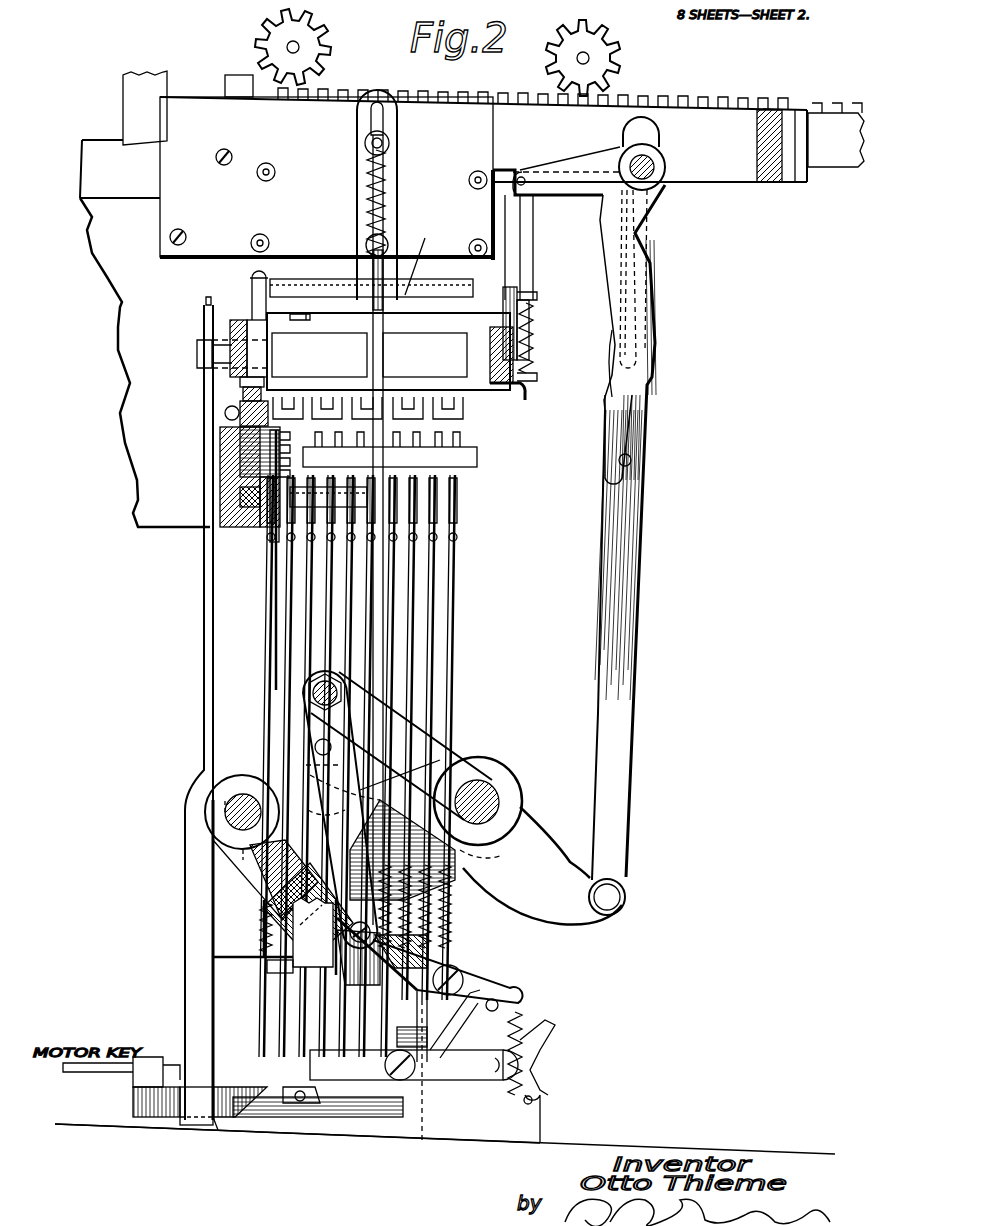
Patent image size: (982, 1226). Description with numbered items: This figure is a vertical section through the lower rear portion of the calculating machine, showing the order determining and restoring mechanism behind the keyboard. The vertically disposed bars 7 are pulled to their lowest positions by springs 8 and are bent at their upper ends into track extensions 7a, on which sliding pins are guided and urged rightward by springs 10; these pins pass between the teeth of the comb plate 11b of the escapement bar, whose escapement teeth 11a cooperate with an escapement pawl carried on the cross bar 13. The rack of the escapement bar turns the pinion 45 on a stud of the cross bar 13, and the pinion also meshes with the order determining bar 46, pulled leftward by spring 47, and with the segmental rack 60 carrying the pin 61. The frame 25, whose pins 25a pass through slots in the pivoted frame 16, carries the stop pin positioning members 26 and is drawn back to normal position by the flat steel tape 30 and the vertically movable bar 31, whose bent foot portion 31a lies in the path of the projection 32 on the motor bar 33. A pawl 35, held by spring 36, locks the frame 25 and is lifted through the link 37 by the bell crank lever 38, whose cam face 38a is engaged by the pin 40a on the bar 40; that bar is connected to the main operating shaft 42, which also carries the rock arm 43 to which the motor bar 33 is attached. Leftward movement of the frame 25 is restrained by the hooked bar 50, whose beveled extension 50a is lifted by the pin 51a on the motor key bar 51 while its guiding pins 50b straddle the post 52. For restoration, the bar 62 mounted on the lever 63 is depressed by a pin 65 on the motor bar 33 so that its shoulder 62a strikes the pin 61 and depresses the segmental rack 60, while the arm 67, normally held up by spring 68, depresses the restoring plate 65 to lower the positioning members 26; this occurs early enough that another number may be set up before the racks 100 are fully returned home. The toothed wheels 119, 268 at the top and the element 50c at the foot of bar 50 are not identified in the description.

The gear 119 is at (318, 38).
The gear 268 is at (598, 54).
The racks 100 is at (512, 135).
The spring 68 is at (397, 172).
The bar 62 is at (383, 220).
The restoring plate 65 is at (363, 725).
The link 37 is at (525, 230).
The bell crank lever 38 is at (628, 275).
The cam face 38a is at (605, 432).
The bar 40 is at (628, 587).
The pin 40a is at (631, 460).
The arm 67 is at (371, 298).
The frame 16 is at (232, 318).
The flat steel tape 30 is at (388, 351).
The frame 25 is at (448, 355).
The pins 25a is at (197, 352).
The pawl 35 is at (503, 305).
The spring 36 is at (535, 315).
The stop pin positioning members 26 is at (463, 410).
The comb plate 11b is at (477, 455).
The order determining bar 46 is at (240, 396).
The spring 47 is at (225, 410).
The pinion 45 is at (252, 445).
The cross bar 13 is at (225, 468).
The escapement teeth 11a is at (245, 495).
The pin 61 is at (328, 496).
The segmental rack 60 is at (270, 547).
The bars 7 is at (430, 690).
The track extensions 7a is at (457, 512).
The springs 10 is at (457, 540).
The bar 50 is at (204, 637).
The shoulder 62a is at (261, 847).
The rock arm 43 is at (377, 806).
The main operating shaft 42 is at (498, 790).
The projection 32 is at (323, 755).
The motor bar 33 is at (325, 790).
The springs 8 is at (450, 907).
The bar 31 is at (313, 932).
The foot portion 31a is at (274, 937).
The lever 63 is at (555, 995).
The beveled extension 50a is at (245, 1082).
The guiding pins 50b is at (165, 1117).
The foot 50c is at (220, 1120).
The motor key bar 51 is at (270, 1117).
The pin 51a is at (285, 1085).
The post 52 is at (195, 1125).